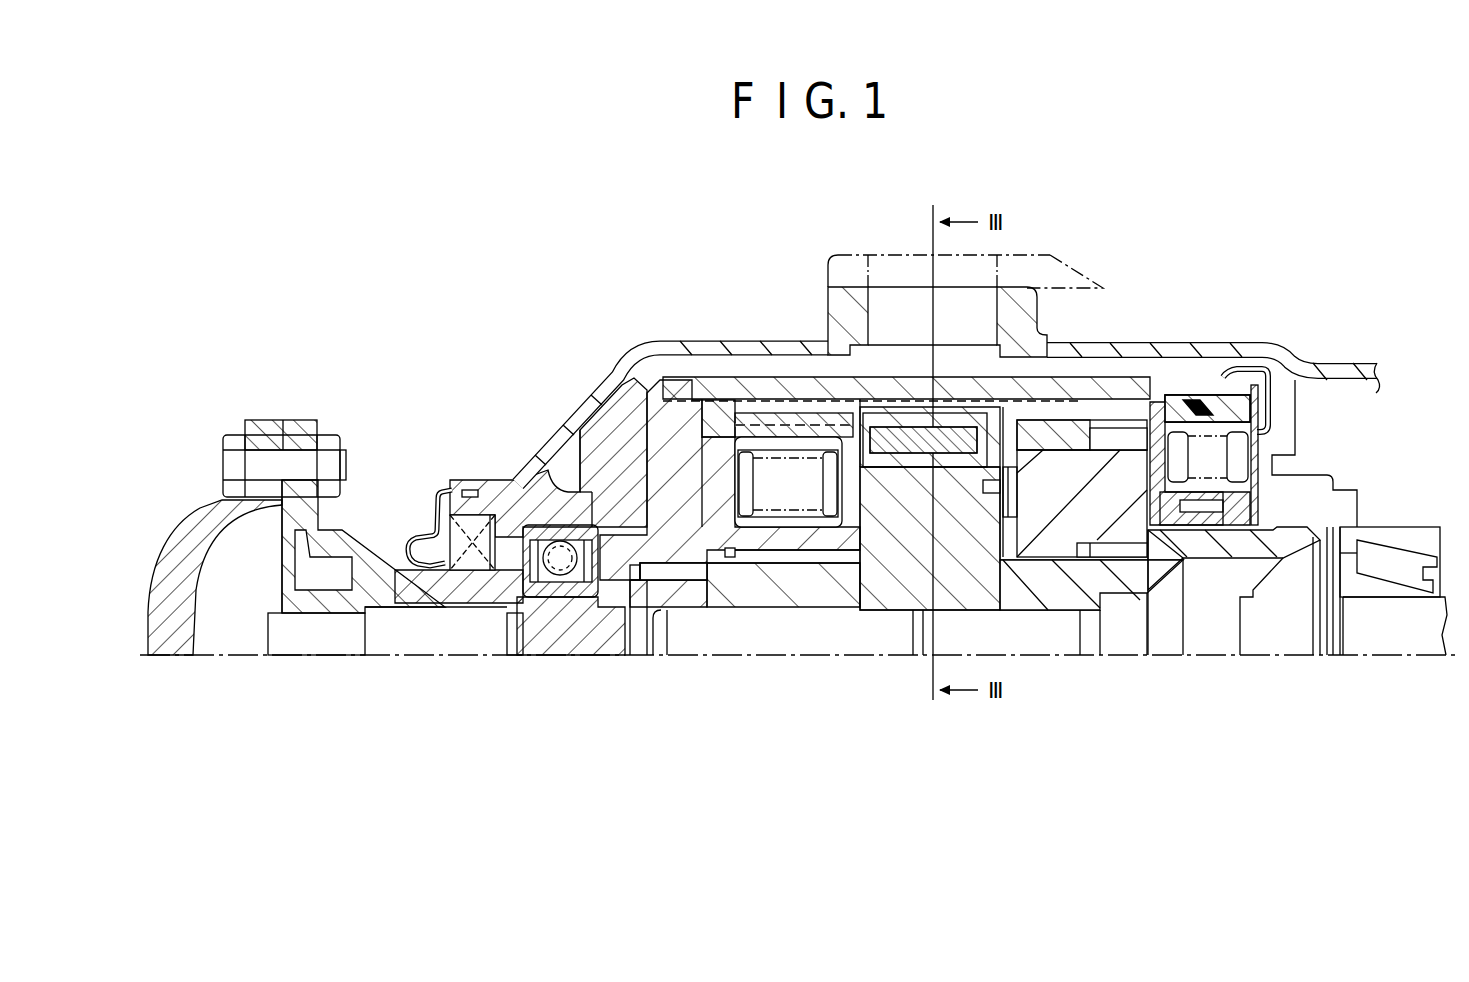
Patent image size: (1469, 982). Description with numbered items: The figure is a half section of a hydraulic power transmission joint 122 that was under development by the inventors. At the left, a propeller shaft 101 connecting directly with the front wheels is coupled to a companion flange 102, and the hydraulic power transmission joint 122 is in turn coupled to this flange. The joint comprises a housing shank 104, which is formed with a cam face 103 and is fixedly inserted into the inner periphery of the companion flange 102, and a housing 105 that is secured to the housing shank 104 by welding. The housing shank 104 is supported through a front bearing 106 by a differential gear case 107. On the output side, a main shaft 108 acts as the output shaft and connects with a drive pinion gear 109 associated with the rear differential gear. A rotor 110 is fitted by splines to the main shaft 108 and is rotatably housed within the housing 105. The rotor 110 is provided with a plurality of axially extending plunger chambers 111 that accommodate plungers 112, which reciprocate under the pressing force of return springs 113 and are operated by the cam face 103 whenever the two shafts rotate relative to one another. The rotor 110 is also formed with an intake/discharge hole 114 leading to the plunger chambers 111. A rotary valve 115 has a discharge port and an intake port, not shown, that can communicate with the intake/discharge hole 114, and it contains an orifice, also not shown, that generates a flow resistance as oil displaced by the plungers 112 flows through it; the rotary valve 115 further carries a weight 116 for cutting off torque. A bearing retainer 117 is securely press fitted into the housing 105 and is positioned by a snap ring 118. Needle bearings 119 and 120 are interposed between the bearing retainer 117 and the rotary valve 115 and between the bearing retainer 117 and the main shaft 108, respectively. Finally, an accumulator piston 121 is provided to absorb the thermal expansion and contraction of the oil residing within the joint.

The propeller shaft 101 is at (165, 563).
The companion flange 102 is at (380, 550).
The cam face 103 is at (705, 625).
The housing shank 104 is at (573, 623).
The housing 105 is at (737, 387).
The front bearing 106 is at (507, 515).
The differential gear case 107 is at (837, 312).
The main shaft 108 is at (1067, 590).
The drive pinion gear 109 is at (1397, 643).
The rotor 110 is at (847, 530).
The plunger chambers 111 is at (810, 497).
The plungers 112 is at (710, 457).
The return springs 113 is at (740, 627).
The intake/discharge hole 114 is at (867, 493).
The rotary valve 115 is at (957, 523).
The weight 116 is at (930, 430).
The bearing retainer 117 is at (1067, 473).
The snap ring 118 is at (1152, 393).
The needle bearing 119 is at (1008, 485).
The needle bearing 120 is at (1127, 557).
The accumulator piston 121 is at (1233, 410).
The hydraulic power transmission joint 122 is at (436, 690).